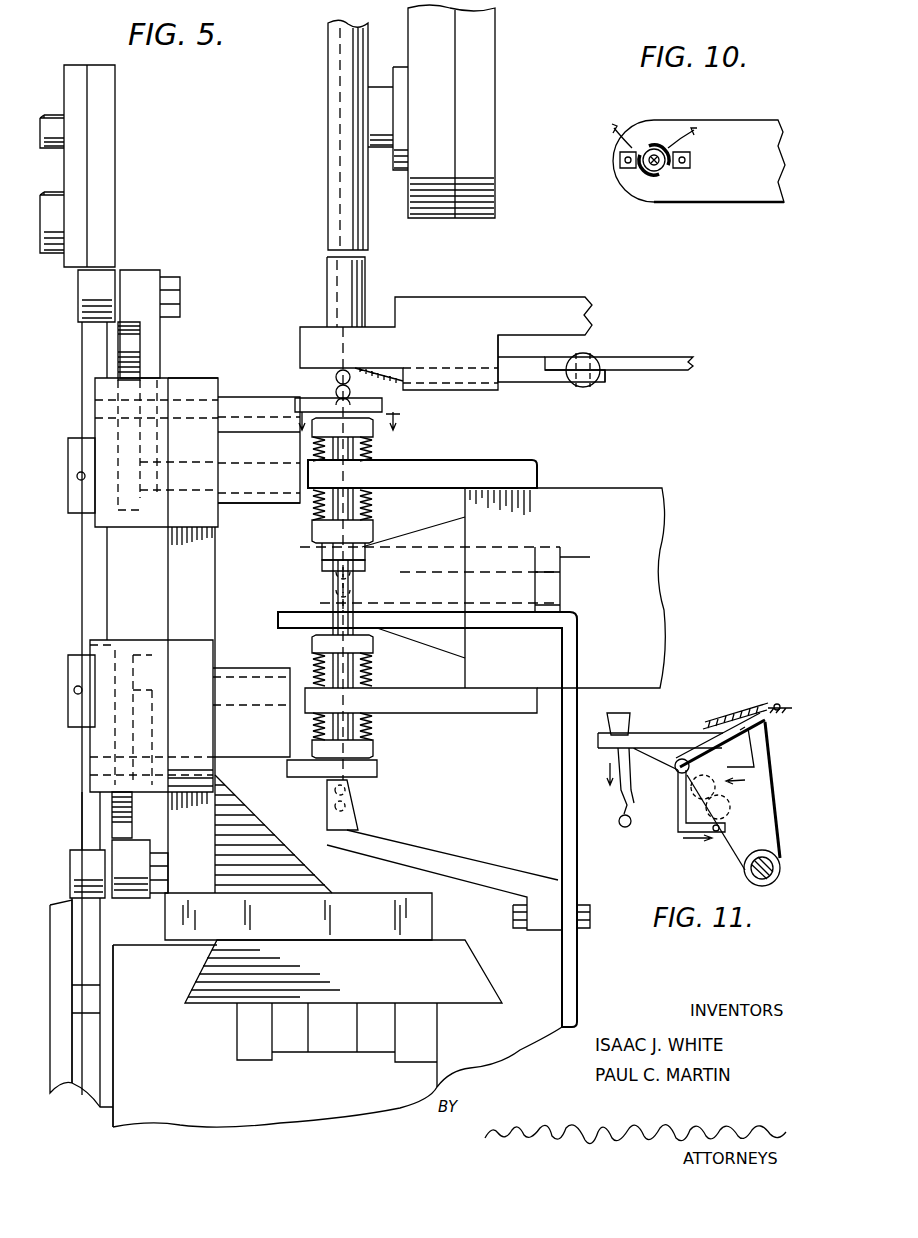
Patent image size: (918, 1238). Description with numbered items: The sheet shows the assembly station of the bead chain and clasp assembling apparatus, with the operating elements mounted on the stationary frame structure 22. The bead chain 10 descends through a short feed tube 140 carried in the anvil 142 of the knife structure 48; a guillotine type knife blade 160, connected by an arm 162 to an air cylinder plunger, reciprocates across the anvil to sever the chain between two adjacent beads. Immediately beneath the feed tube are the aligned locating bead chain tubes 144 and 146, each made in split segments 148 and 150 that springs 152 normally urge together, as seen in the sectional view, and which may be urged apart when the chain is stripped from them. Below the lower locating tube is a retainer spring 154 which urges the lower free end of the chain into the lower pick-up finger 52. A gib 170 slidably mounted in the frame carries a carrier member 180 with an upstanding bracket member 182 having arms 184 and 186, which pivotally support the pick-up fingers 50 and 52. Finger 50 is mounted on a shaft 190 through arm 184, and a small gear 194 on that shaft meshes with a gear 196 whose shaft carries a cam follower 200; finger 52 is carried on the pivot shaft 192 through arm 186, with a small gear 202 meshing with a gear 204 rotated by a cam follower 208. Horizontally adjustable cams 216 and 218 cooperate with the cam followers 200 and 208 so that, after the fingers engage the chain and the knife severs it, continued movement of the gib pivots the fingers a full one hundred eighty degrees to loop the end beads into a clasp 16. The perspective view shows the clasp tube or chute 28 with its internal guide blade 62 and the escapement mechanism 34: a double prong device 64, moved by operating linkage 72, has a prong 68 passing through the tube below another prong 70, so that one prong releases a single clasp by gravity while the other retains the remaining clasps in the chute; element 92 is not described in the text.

In FIG. 5, the bead chain 10 is at (354, 400).
In FIG. 10, the bead chain 10 is at (654, 166).
In FIG. 11, the clasp 16 is at (678, 815).
In FIG. 5, the stationary frame structure 22 is at (522, 460).
In FIG. 10, the stationary frame structure 22 is at (730, 120).
In FIG. 11, the clasp tube or chute 28 is at (758, 832).
In FIG. 11, the escapement mechanism 34 is at (733, 697).
In FIG. 5, the knife structure 48 is at (680, 357).
In FIG. 5, the pick-up finger 50 is at (268, 397).
In FIG. 5, the pick-up finger 52 is at (287, 777).
In FIG. 11, the internal guide blade 62 is at (745, 868).
In FIG. 11, the double prong device 64 is at (760, 745).
In FIG. 11, the prong 68 is at (686, 832).
In FIG. 11, the prong 70 is at (750, 773).
In FIG. 11, the operating linkage 72 is at (650, 733).
In FIG. 5, the column 92 is at (328, 68).
In FIG. 5, the feed tube 140 is at (327, 283).
In FIG. 5, the anvil 142 is at (432, 297).
In FIG. 5, the locating bead chain tube 144 is at (373, 452).
In FIG. 10, the locating bead chain tube 144 is at (675, 170).
In FIG. 5, the locating bead chain tube 146 is at (373, 726).
In FIG. 5, the split segment 148 is at (360, 571).
In FIG. 10, the split segment 148 is at (684, 152).
In FIG. 5, the split segment 150 is at (322, 556).
In FIG. 10, the split segment 150 is at (635, 180).
In FIG. 5, the spring 152 is at (312, 510).
In FIG. 5, the retainer spring 154 is at (430, 845).
In FIG. 5, the knife blade 160 is at (512, 382).
In FIG. 5, the arm 162 is at (645, 382).
In FIG. 5, the gib 170 is at (443, 940).
In FIG. 5, the carrier member 180 is at (370, 893).
In FIG. 5, the bracket member 182 is at (215, 610).
In FIG. 5, the arm 184 is at (195, 378).
In FIG. 5, the arm 186 is at (180, 640).
In FIG. 5, the shaft 190 is at (228, 503).
In FIG. 5, the pivot shaft 192 is at (213, 720).
In FIG. 5, the small gear 194 is at (118, 527).
In FIG. 5, the gear 196 is at (118, 362).
In FIG. 5, the cam follower 200 is at (82, 400).
In FIG. 5, the small gear 202 is at (90, 645).
In FIG. 5, the gear 204 is at (112, 803).
In FIG. 5, the cam follower 208 is at (82, 792).
In FIG. 5, the cam 216 is at (115, 262).
In FIG. 5, the cam 218 is at (55, 912).